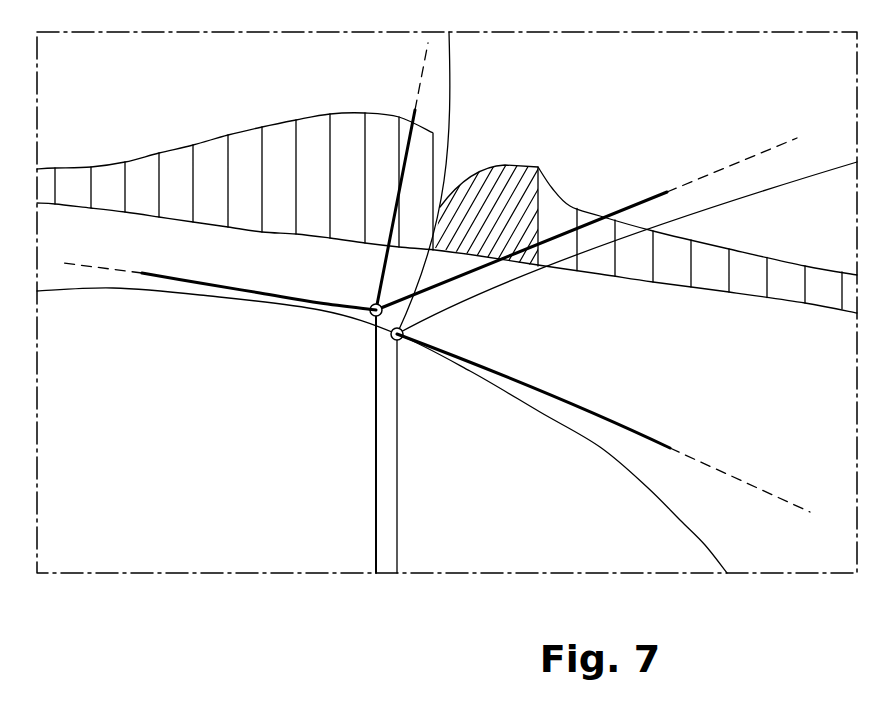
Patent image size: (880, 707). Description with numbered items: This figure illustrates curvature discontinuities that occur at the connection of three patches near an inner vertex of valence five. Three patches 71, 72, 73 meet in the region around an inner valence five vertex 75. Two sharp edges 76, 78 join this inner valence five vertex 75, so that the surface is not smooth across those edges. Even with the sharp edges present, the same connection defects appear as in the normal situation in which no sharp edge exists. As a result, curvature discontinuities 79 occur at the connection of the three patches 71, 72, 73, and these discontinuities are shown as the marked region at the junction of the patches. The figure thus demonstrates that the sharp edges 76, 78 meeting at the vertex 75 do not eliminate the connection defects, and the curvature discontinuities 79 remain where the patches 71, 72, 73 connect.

The patch 71 is at (235, 154).
The patch 72 is at (697, 197).
The patch 73 is at (382, 430).
The inner valence five vertex 75 is at (370, 317).
The sharp edge 76 is at (162, 277).
The sharp edge 78 is at (634, 429).
The curvature discontinuities 79 is at (483, 148).